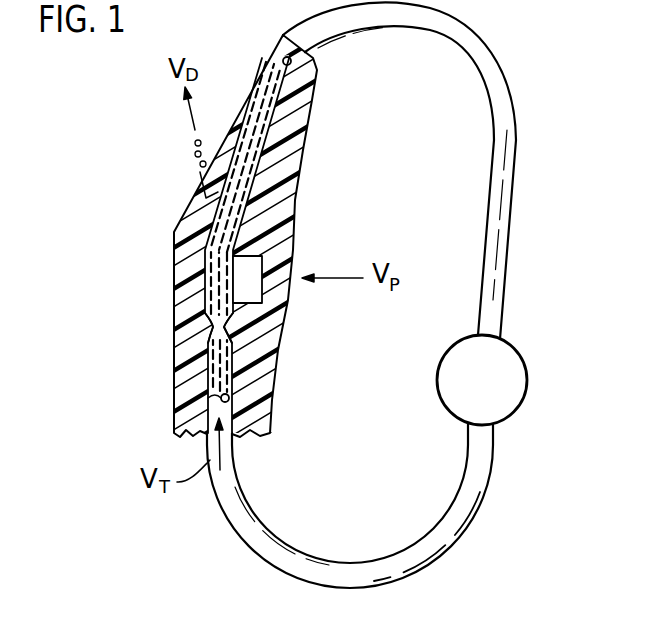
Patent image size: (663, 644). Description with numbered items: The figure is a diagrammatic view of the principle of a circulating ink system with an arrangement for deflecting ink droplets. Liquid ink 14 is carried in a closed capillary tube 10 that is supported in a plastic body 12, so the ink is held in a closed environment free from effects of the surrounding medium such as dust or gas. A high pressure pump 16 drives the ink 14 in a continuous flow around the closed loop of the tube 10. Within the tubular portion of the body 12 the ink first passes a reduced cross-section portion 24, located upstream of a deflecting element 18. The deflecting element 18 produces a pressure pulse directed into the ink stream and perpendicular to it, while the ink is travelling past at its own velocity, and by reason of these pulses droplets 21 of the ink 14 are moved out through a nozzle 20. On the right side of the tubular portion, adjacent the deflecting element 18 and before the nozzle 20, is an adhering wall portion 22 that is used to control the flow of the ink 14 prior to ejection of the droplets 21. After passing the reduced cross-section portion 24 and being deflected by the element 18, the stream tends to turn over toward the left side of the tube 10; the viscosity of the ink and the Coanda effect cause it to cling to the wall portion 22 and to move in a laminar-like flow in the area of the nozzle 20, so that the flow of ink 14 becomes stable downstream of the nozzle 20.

The closed capillary tube 10 is at (458, 488).
The plastic body 12 is at (263, 361).
The liquid ink 14 is at (262, 110).
The high pressure pump 16 is at (518, 351).
The deflecting element 18 is at (250, 278).
The nozzle 20 is at (205, 178).
The droplets 21 is at (194, 155).
The adhering wall portion 22 is at (296, 218).
The reduced cross-section portion 24 is at (232, 328).